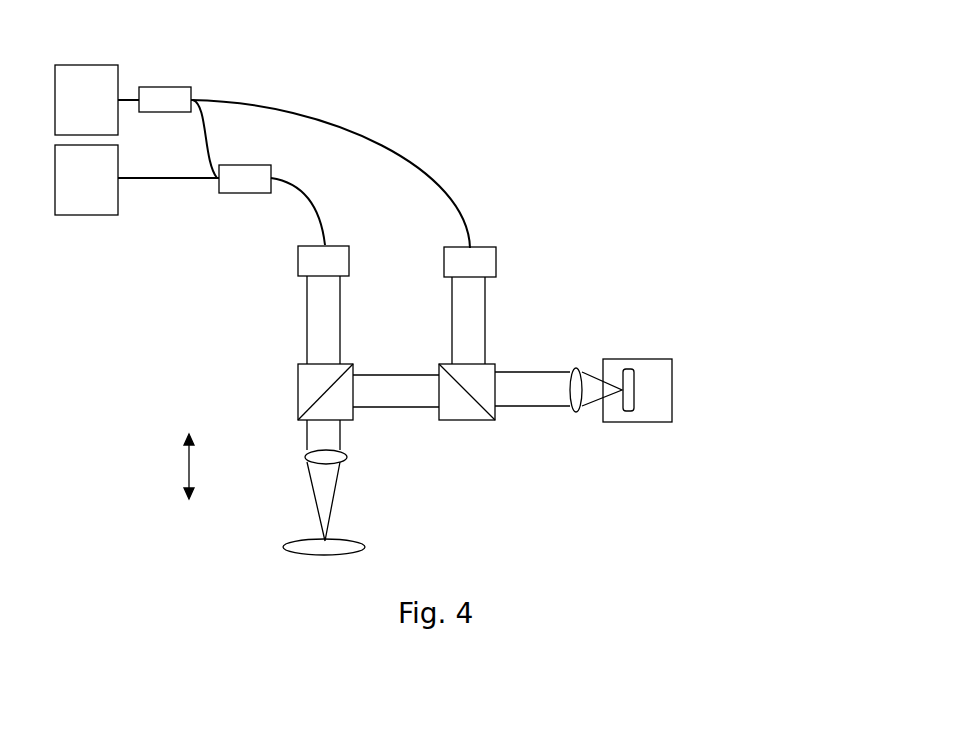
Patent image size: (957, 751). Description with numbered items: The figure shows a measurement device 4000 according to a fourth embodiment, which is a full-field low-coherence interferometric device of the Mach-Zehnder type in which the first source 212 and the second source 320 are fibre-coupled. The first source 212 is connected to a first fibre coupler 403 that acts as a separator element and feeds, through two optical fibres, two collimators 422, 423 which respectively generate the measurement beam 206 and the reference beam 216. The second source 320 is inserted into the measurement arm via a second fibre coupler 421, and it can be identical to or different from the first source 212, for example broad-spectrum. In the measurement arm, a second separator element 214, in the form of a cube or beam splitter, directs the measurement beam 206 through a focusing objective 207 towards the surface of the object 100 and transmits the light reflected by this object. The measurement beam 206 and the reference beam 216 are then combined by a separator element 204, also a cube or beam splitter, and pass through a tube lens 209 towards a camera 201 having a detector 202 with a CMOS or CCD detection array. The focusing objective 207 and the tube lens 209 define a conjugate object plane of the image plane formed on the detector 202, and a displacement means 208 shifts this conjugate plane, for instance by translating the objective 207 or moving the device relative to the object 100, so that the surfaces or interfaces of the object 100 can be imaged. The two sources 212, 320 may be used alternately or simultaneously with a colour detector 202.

The first source 212 is at (86, 64).
The second light source 320 is at (83, 215).
The first fibre coupler 403 is at (165, 86).
The second fibre coupler 421 is at (243, 193).
The collimator 422 is at (349, 262).
The collimator 423 is at (496, 262).
The reference beam 216 is at (485, 338).
The second separator element 214 is at (298, 393).
The separator element 204 is at (470, 422).
The tube lens 209 is at (577, 413).
The camera 201 is at (672, 392).
The detector 202 is at (630, 421).
The focusing objective 207 is at (303, 457).
The measurement beam 206 is at (337, 485).
The object 100 is at (283, 546).
The displacement means 208 is at (182, 475).
The measurement device 4000 is at (735, 313).